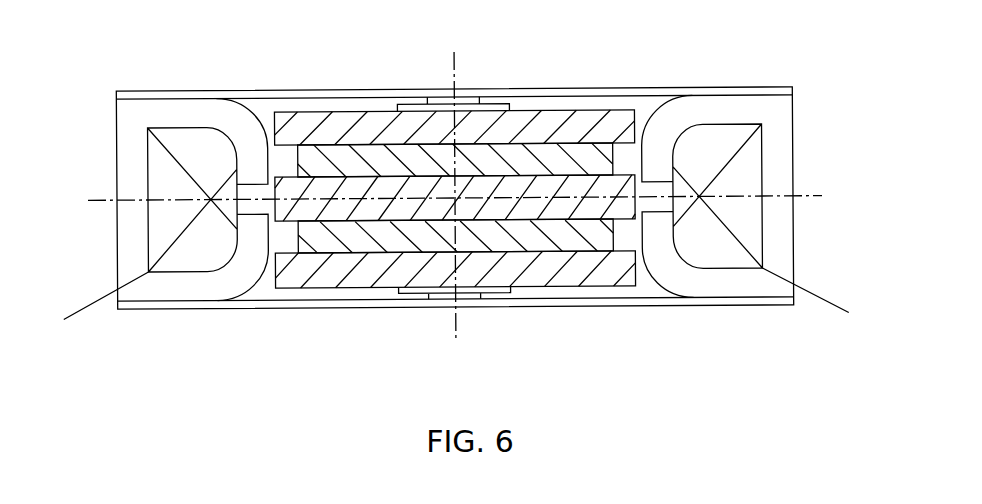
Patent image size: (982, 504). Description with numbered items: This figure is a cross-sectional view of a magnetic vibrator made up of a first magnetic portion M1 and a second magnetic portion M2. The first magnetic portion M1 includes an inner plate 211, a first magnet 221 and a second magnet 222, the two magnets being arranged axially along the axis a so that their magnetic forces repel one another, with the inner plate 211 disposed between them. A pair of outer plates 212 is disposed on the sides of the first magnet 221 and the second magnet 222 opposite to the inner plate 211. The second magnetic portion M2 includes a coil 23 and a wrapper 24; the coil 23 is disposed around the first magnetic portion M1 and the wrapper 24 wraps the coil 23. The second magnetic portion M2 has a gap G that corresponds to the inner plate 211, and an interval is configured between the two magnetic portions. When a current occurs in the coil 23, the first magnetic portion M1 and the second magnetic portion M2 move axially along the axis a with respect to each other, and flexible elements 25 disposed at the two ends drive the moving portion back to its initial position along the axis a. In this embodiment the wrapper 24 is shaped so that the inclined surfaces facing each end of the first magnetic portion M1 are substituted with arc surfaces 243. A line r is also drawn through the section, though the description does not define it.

The gap G is at (254, 190).
The inner plate 211 is at (325, 185).
The outer plates 212 is at (377, 130).
The first magnet 221 is at (560, 162).
The second magnet 222 is at (322, 240).
The coil 23 is at (717, 132).
The arc surfaces 243 is at (662, 107).
The wrapper 24 is at (737, 284).
The flexible elements 25 is at (475, 310).
The first magnetic portion M1 is at (488, 86).
The second magnetic portion M2 is at (700, 314).
The axis a is at (455, 185).
The axis r is at (462, 197).